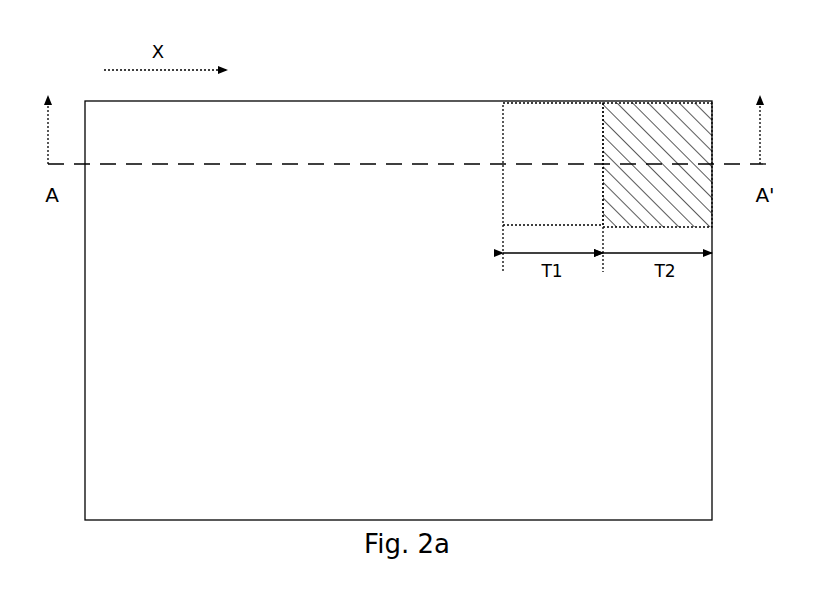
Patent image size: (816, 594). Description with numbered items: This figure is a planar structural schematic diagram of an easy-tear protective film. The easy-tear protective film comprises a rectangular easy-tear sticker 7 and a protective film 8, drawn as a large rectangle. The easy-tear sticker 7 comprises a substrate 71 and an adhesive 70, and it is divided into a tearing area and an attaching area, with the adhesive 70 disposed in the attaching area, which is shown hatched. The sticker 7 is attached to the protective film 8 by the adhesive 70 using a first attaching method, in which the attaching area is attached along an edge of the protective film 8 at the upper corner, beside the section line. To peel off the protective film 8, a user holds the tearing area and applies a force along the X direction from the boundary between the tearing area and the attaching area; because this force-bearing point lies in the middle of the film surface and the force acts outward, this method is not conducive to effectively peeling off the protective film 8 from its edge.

The easy-tear sticker 7 is at (607, 151).
The protective film 8 is at (383, 125).
The adhesive 70 is at (657, 169).
The substrate 71 is at (523, 133).